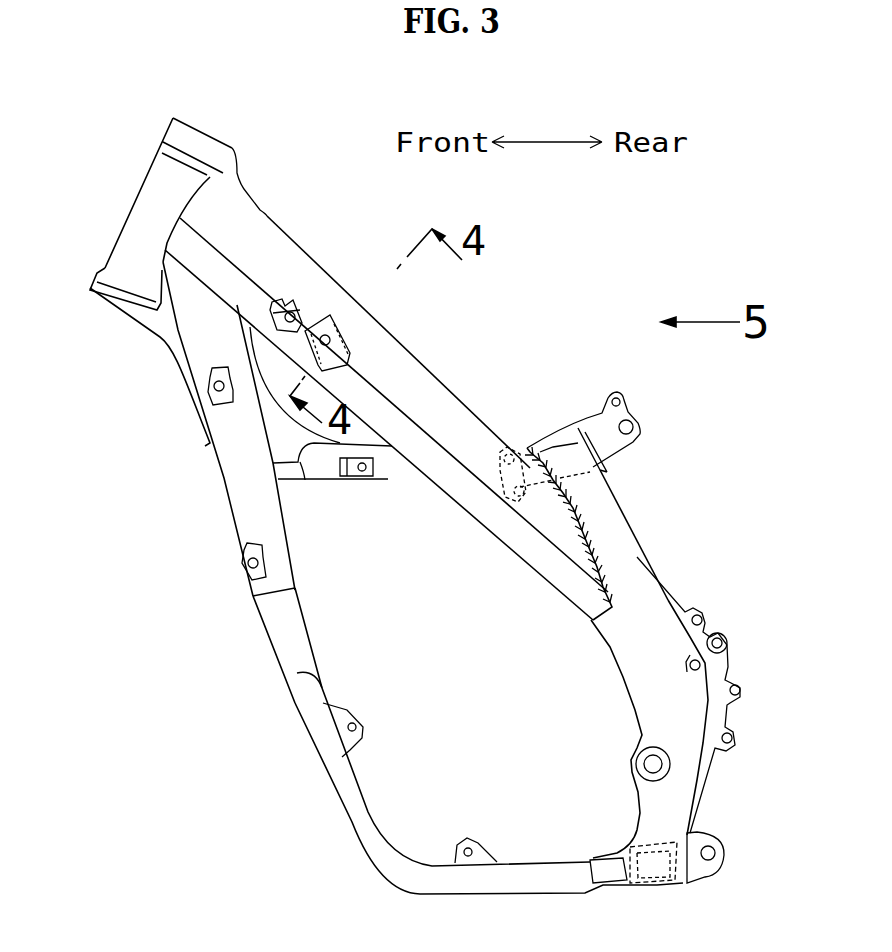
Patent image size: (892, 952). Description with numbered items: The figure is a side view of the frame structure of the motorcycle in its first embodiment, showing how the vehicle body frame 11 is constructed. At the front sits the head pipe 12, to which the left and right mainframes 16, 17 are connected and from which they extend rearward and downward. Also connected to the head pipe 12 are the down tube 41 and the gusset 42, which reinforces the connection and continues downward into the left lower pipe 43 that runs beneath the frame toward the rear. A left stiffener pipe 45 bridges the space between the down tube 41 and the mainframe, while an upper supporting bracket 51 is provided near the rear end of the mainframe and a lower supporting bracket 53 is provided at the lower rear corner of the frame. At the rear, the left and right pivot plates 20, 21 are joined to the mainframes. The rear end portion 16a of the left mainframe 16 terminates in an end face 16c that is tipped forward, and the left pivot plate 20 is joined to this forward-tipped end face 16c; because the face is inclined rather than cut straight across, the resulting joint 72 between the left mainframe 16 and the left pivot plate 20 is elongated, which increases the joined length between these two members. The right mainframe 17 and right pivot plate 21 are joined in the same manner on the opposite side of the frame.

The vehicle body frame 11 is at (315, 243).
The head pipe 12 is at (158, 208).
The left mainframe 16 is at (447, 397).
The right mainframe 17 is at (379, 435).
The rear end portion of left mainframe 16a is at (557, 528).
The end face of left mainframe 16c is at (573, 510).
The left pivot plate 20 is at (692, 698).
The right pivot plate 21 is at (713, 705).
The down tube 41 is at (230, 482).
The gusset 42 is at (275, 625).
The left lower pipe 43 is at (332, 780).
The left stiffener pipe 45 is at (393, 465).
The upper supporting bracket 51 is at (632, 410).
The lower supporting bracket 53 is at (714, 850).
The joint 72 is at (590, 533).